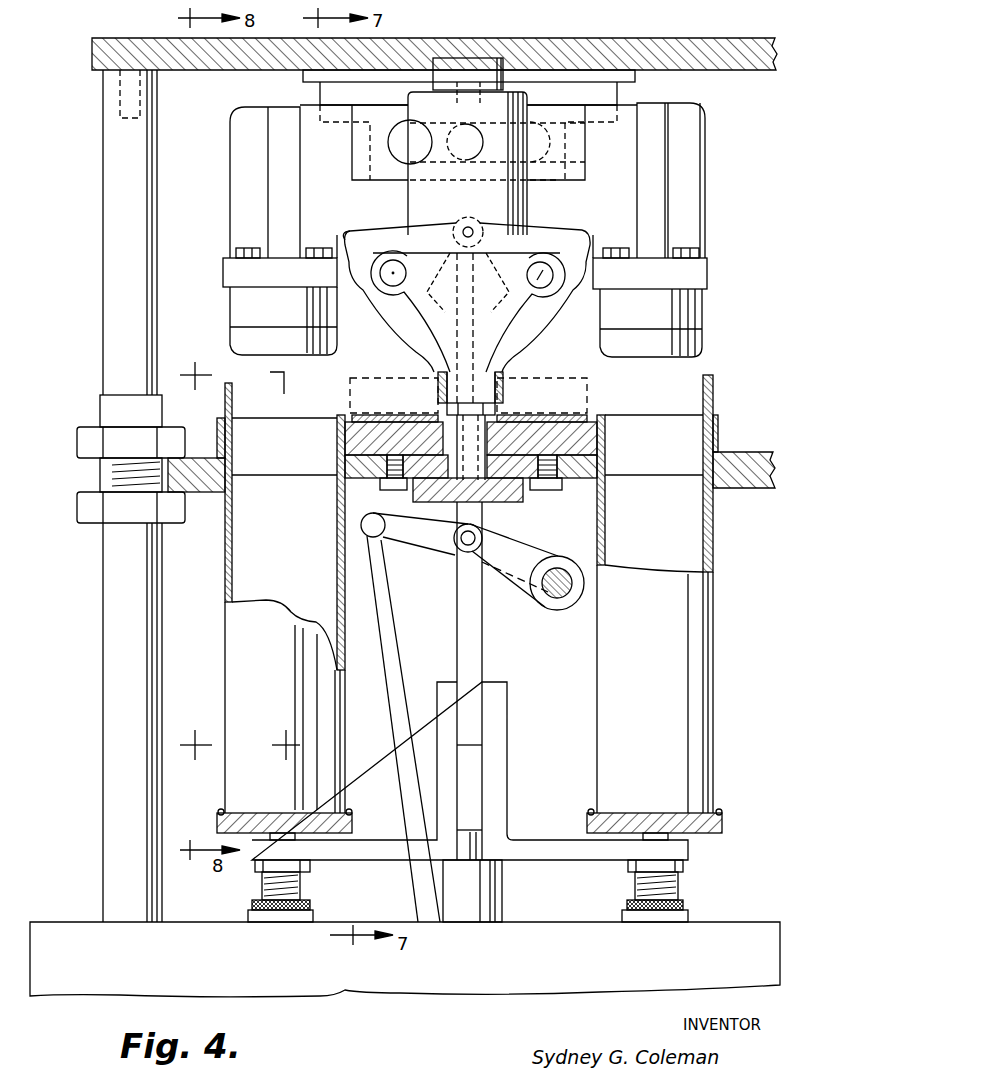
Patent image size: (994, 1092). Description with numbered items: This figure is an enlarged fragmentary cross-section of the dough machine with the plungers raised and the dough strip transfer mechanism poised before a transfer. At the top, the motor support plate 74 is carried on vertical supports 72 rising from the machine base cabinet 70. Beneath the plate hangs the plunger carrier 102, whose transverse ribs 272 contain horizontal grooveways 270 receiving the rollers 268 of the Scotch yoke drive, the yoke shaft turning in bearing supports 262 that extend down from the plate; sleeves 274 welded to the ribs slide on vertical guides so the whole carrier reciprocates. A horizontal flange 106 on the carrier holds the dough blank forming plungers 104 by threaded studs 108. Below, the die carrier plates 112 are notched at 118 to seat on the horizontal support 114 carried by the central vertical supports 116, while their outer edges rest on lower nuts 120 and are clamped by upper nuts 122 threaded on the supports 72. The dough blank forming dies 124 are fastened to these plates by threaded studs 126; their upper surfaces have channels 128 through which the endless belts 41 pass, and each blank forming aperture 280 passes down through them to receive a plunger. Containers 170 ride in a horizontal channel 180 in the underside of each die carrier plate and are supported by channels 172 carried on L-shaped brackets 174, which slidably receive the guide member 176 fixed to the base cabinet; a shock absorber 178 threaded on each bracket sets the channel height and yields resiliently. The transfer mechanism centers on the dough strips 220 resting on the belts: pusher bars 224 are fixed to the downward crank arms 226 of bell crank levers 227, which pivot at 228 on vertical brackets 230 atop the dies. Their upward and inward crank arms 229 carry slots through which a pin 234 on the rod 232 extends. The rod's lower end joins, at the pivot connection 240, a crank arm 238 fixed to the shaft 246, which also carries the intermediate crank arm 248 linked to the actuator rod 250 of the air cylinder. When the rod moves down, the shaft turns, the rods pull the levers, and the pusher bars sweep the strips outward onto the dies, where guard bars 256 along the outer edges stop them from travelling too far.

The endless belts 41 is at (352, 418).
The machine base cabinet 70 is at (370, 987).
The vertical supports 72 is at (110, 104).
The motor support plate 74 is at (95, 56).
The plunger carrier 102 is at (272, 143).
The dough blank forming plungers 104 is at (226, 320).
The horizontal flange 106 is at (223, 272).
The threaded studs 108 is at (240, 250).
The die carrier plates 112 is at (734, 488).
The horizontal support 114 is at (485, 503).
The vertical supports 116 is at (492, 673).
The notch 118 is at (520, 490).
The lower nuts 120 is at (84, 505).
The upper nuts 122 is at (82, 447).
The dough blank forming dies 124 is at (719, 430).
The threaded studs 126 is at (392, 491).
The channels 128 is at (345, 437).
The containers 170 is at (292, 800).
The channels 172 is at (352, 823).
The L-shaped brackets 174 is at (500, 822).
The guide member 176 is at (495, 905).
The shock absorber 178 is at (308, 888).
The horizontal channel 180 is at (232, 497).
The dough strips 220 is at (412, 409).
The pusher bars 224 is at (440, 380).
The crank arm 226 is at (438, 350).
The bell crank lever 227 is at (378, 327).
The pivot 228 is at (388, 283).
The crank arm 229 is at (430, 236).
The vertical brackets 230 is at (365, 245).
The rod 232 is at (482, 382).
The pin 234 is at (475, 232).
The crank arm 238 is at (535, 600).
The pin 240 is at (476, 537).
The shaft 246 is at (562, 610).
The intermediate crank arm 248 is at (448, 565).
The actuator rod 250 is at (398, 690).
The guard bars 256 is at (226, 404).
The bearing supports 262 is at (385, 202).
The rollers 268 is at (486, 163).
The horizontal grooveways 270 is at (530, 138).
The transverse ribs 272 is at (695, 206).
The sleeves 274 is at (428, 112).
The blank forming aperture 280 is at (233, 452).